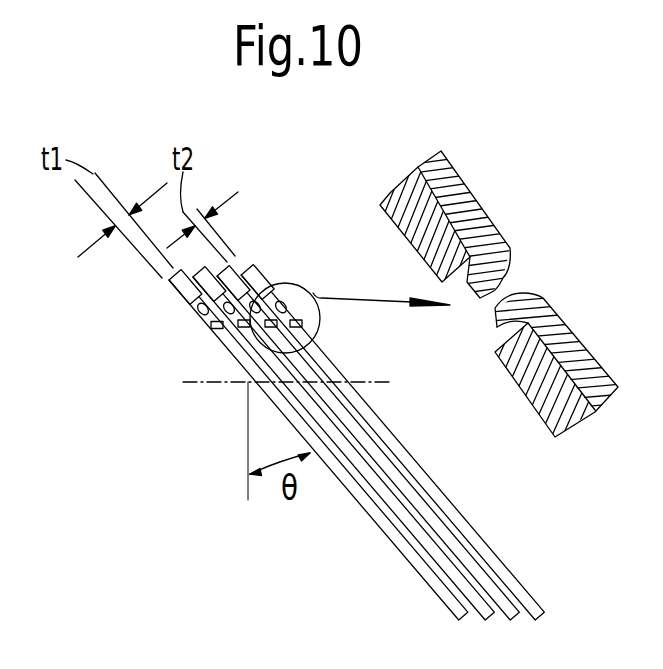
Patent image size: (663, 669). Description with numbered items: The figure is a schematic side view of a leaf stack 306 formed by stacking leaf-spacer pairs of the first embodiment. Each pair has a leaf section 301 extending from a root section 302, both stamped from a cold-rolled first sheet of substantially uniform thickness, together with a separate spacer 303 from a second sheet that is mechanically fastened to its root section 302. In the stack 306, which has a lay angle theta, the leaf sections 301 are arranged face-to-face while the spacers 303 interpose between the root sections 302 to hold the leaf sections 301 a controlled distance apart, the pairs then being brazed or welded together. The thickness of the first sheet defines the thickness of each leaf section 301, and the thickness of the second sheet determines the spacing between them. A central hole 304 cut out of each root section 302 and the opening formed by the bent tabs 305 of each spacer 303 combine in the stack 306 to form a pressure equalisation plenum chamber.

The leaf section 301 is at (403, 548).
The root section 302 is at (178, 299).
The spacer 303 is at (222, 346).
The central hole 304 is at (512, 280).
The tabs 305 is at (493, 306).
The stack 306 is at (265, 246).